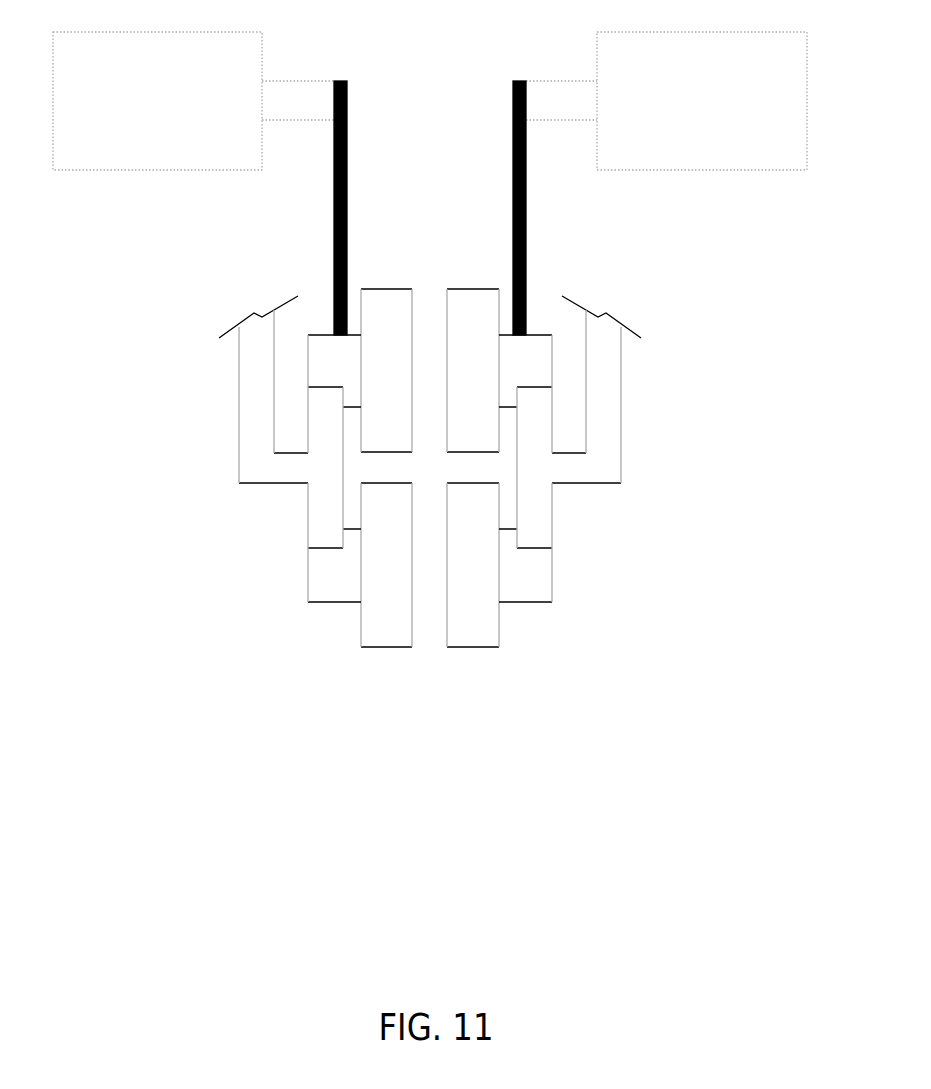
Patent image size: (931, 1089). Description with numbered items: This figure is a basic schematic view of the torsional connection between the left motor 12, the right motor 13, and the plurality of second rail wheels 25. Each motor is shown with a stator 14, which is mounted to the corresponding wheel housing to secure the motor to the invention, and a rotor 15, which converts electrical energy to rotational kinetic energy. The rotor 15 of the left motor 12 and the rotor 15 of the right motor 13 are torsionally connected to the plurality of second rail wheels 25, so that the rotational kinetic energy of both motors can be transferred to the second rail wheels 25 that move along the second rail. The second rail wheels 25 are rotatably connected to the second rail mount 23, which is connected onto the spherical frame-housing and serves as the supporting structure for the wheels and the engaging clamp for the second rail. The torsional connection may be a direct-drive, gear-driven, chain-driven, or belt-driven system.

The left motor 12 is at (742, 220).
The right motor 13 is at (130, 200).
The stator 14 is at (203, 163).
The rotor 15 is at (315, 120).
The second rail mount 23 is at (258, 479).
The plurality of second rail wheels 25 is at (370, 293).